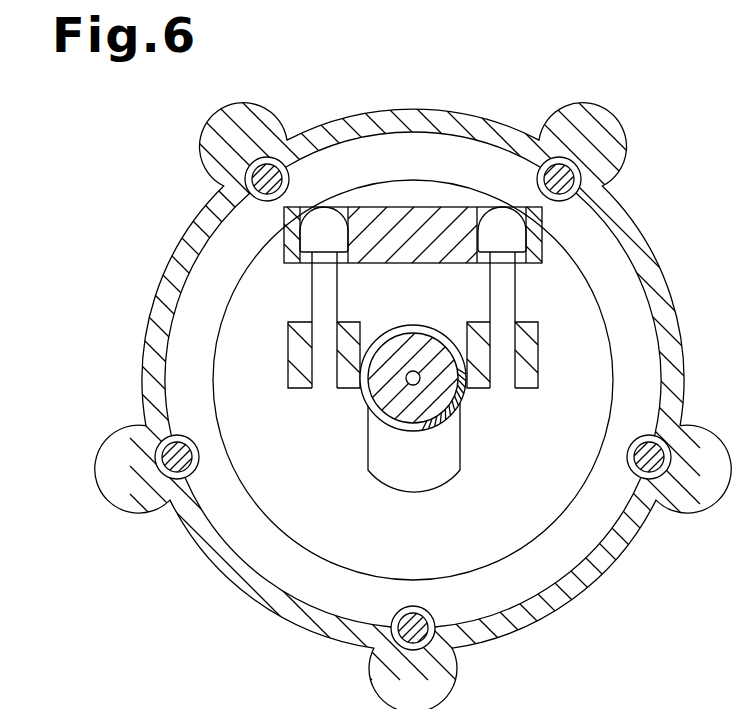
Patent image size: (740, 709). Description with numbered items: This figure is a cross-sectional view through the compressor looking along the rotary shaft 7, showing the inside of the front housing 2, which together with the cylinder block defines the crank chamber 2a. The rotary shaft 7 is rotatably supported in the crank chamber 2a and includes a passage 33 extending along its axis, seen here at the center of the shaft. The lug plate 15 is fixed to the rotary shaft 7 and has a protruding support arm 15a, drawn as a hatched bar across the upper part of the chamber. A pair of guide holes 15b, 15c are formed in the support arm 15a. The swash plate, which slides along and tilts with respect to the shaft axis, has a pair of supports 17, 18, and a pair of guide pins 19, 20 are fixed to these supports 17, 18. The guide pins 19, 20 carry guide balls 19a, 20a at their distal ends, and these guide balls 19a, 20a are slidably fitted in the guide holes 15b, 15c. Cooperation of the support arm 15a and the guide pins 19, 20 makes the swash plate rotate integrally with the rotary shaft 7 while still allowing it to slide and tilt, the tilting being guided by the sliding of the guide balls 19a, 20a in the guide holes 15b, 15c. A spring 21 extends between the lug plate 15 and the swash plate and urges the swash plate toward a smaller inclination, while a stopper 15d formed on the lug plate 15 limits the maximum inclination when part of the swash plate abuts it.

The front housing 2 is at (639, 233).
The crank chamber 2a is at (531, 594).
The rotary shaft 7 is at (393, 343).
The lug plate 15 is at (327, 556).
The support arm 15a is at (453, 262).
The guide hole 15b is at (302, 263).
The guide hole 15c is at (522, 263).
The stopper 15d is at (430, 487).
The support 17 is at (290, 374).
The support 18 is at (542, 365).
The guide pin 19 is at (310, 307).
The guide ball 19a is at (320, 212).
The guide pin 20 is at (518, 308).
The guide ball 20a is at (500, 208).
The spring 21 is at (362, 395).
The passage 33 is at (412, 388).